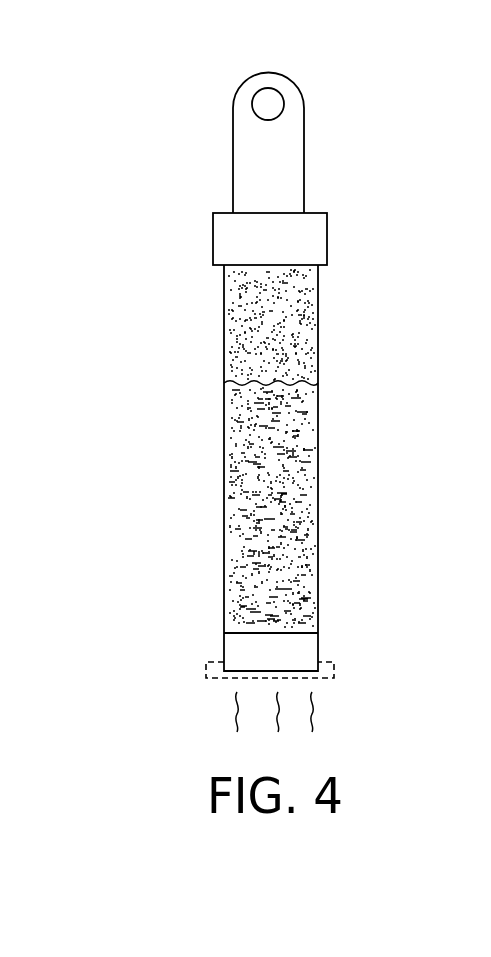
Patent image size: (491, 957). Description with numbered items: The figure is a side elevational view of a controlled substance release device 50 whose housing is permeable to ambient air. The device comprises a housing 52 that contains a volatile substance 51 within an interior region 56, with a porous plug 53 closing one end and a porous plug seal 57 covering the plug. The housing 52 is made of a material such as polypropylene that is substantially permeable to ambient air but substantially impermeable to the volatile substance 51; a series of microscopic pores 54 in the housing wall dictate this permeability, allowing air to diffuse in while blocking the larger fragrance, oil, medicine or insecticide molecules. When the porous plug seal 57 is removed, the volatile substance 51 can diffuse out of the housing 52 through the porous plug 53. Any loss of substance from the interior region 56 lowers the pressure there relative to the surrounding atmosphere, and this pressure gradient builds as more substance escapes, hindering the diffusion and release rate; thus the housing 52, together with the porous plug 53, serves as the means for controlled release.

The controlled substance release device 50 is at (158, 122).
The volatile substance 51 is at (250, 497).
The housing 52 is at (317, 327).
The porous plug 53 is at (307, 660).
The microscopic pores 54 is at (240, 363).
The interior region 56 is at (237, 292).
The porous plug seal 57 is at (203, 668).